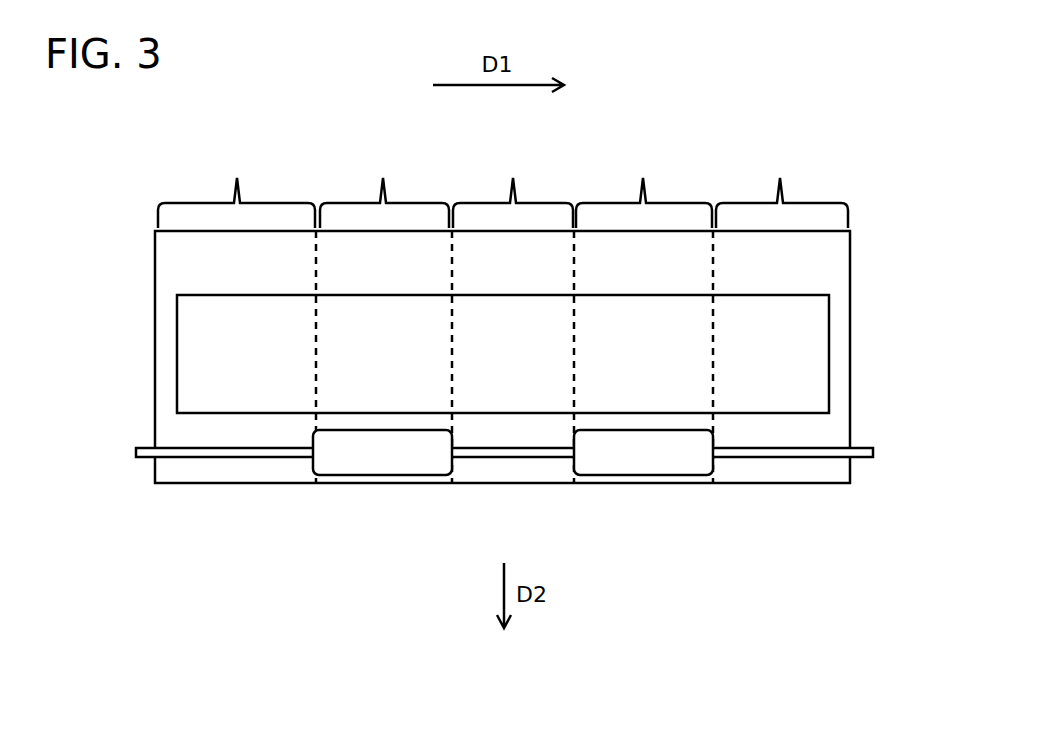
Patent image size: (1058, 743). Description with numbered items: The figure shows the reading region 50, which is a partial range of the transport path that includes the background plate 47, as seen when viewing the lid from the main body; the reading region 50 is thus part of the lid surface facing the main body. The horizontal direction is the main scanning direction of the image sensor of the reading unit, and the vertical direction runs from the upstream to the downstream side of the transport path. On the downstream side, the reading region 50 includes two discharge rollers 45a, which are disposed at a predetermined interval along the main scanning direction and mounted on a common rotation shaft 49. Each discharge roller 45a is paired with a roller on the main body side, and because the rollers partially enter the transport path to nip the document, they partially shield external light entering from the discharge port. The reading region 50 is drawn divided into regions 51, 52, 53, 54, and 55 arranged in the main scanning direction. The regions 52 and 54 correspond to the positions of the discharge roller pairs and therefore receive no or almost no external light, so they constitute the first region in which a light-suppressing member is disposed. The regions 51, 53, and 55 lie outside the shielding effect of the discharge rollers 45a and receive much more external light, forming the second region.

The discharge roller 45a is at (365, 472).
The background plate 47 is at (822, 358).
The rotation shaft 49 is at (140, 460).
The reading region 50 is at (848, 272).
The region 51 is at (236, 188).
The region 52 is at (382, 315).
The region 53 is at (512, 315).
The region 54 is at (643, 315).
The region 55 is at (780, 315).